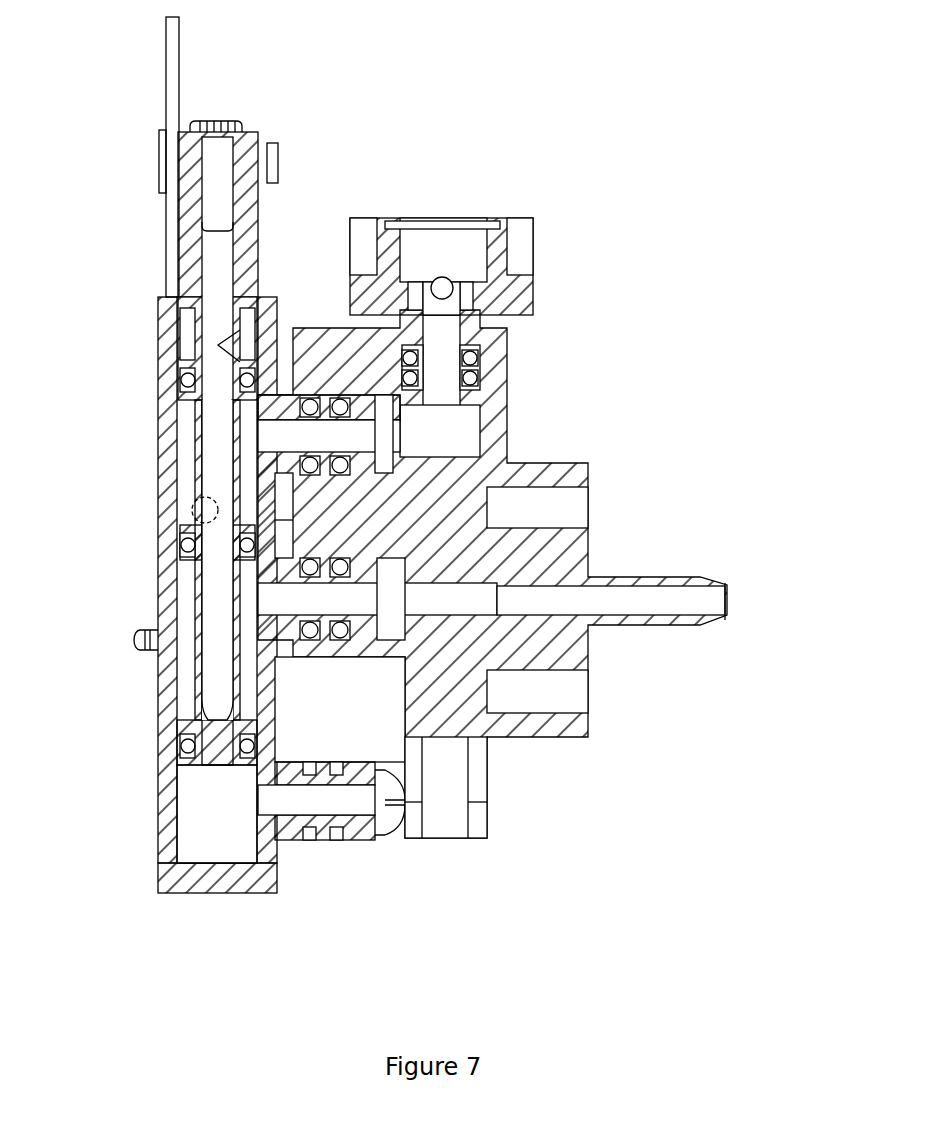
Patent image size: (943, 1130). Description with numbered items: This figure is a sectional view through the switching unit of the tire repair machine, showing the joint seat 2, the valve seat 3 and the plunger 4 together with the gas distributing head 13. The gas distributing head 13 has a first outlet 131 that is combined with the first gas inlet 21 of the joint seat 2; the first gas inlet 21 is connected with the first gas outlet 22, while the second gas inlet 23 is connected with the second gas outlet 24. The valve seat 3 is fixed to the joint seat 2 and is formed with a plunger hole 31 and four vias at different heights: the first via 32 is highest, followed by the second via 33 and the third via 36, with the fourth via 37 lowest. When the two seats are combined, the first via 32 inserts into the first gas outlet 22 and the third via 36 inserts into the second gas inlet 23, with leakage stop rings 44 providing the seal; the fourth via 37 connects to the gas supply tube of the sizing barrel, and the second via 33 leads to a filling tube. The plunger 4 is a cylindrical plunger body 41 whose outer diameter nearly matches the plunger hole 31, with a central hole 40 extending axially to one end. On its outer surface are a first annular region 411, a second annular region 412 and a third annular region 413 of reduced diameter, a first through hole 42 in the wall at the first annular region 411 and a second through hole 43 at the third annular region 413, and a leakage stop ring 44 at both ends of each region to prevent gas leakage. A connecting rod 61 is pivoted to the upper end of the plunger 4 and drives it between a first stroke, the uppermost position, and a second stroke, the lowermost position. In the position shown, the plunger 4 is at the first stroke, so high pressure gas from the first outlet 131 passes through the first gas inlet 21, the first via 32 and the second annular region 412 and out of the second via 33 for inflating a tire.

The joint seat 2 is at (620, 448).
The valve seat 3 is at (130, 881).
The plunger 4 is at (132, 219).
The gas distributing head 13 is at (550, 262).
The first outlet 131 is at (445, 392).
The first gas inlet 21 is at (472, 447).
The first gas outlet 22 is at (488, 495).
The second gas inlet 23 is at (485, 672).
The second gas outlet 24 is at (717, 600).
The plunger hole 31 is at (195, 808).
The first via 32 is at (365, 440).
The second via 33 is at (210, 505).
The third via 36 is at (398, 625).
The fourth via 37 is at (363, 805).
The central hole 40 is at (215, 297).
The plunger body 41 is at (190, 267).
The first through hole 42 is at (240, 345).
The second through hole 43 is at (215, 697).
The leakage stop ring 44 is at (185, 378).
The connecting rod 61 is at (173, 53).
The first annular region 411 is at (185, 347).
The second annular region 412 is at (185, 468).
The third annular region 413 is at (185, 600).